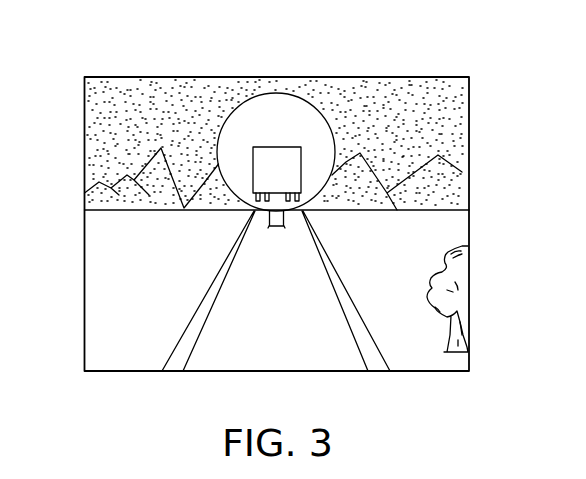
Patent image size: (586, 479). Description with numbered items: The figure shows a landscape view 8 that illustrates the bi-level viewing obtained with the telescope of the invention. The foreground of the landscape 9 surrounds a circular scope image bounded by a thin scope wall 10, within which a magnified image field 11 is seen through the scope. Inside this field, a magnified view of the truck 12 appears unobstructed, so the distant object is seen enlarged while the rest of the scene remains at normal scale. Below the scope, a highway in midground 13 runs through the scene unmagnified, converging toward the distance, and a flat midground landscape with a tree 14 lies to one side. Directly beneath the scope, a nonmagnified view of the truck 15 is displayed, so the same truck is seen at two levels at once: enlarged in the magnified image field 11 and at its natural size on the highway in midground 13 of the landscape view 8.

The landscape view 8 is at (84, 138).
The foreground of the landscape 9 is at (422, 93).
The thin scope wall 10 is at (305, 100).
The magnified image field 11 is at (265, 123).
The magnified view of the truck 12 is at (274, 155).
The highway in midground 13 is at (201, 357).
The flat midground landscape with a tree 14 is at (427, 252).
The nonmagnified view of the truck 15 is at (268, 218).